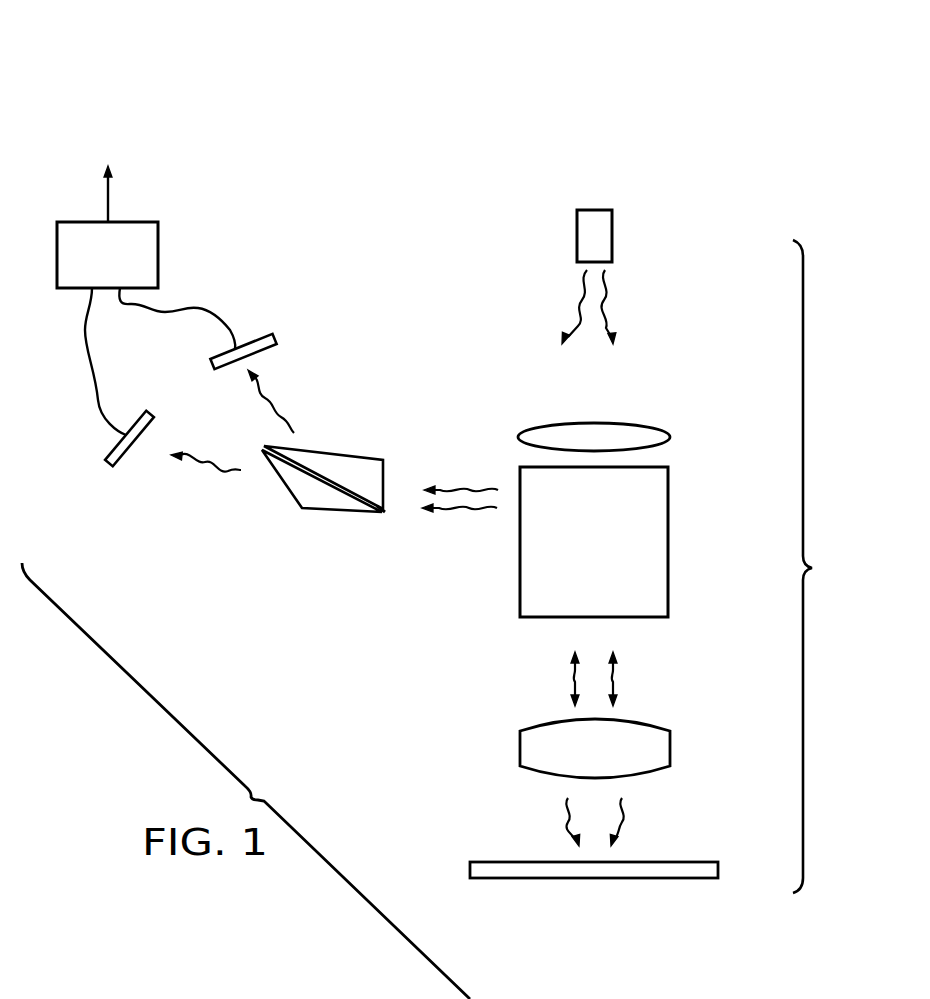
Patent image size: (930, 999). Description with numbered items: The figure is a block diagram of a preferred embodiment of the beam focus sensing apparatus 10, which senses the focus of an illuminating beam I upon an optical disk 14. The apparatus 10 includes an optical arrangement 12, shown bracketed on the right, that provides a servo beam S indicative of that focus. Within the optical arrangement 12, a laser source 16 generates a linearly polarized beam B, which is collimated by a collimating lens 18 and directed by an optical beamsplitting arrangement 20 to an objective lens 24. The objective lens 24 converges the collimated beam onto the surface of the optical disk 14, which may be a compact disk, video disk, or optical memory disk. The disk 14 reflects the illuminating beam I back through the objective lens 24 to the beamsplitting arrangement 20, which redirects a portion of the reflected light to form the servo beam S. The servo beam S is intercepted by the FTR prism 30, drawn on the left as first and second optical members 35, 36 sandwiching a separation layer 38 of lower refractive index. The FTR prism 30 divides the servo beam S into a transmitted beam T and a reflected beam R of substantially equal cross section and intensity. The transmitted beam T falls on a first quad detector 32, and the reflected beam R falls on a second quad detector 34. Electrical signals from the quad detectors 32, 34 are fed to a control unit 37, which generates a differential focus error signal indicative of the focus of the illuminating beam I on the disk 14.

The beam focus sensing apparatus 10 is at (672, 84).
The optical arrangement 12 is at (819, 566).
The optical disk 14 is at (720, 870).
The laser source 16 is at (613, 208).
The collimating lens 18 is at (670, 436).
The optical beamsplitting arrangement 20 is at (668, 518).
The objective lens 24 is at (672, 733).
The FTR prism 30 is at (335, 518).
The first quad detector 32 is at (115, 466).
The second quad detector 34 is at (278, 343).
The first optical member 35 is at (300, 490).
The second optical member 36 is at (356, 462).
The control unit 37 is at (158, 224).
The separation layer 38 is at (383, 512).
The linearly polarized beam B is at (617, 300).
The illuminating beam I is at (618, 814).
The reflected beam R is at (273, 405).
The servo beam S is at (484, 488).
The transmitted beam T is at (216, 467).